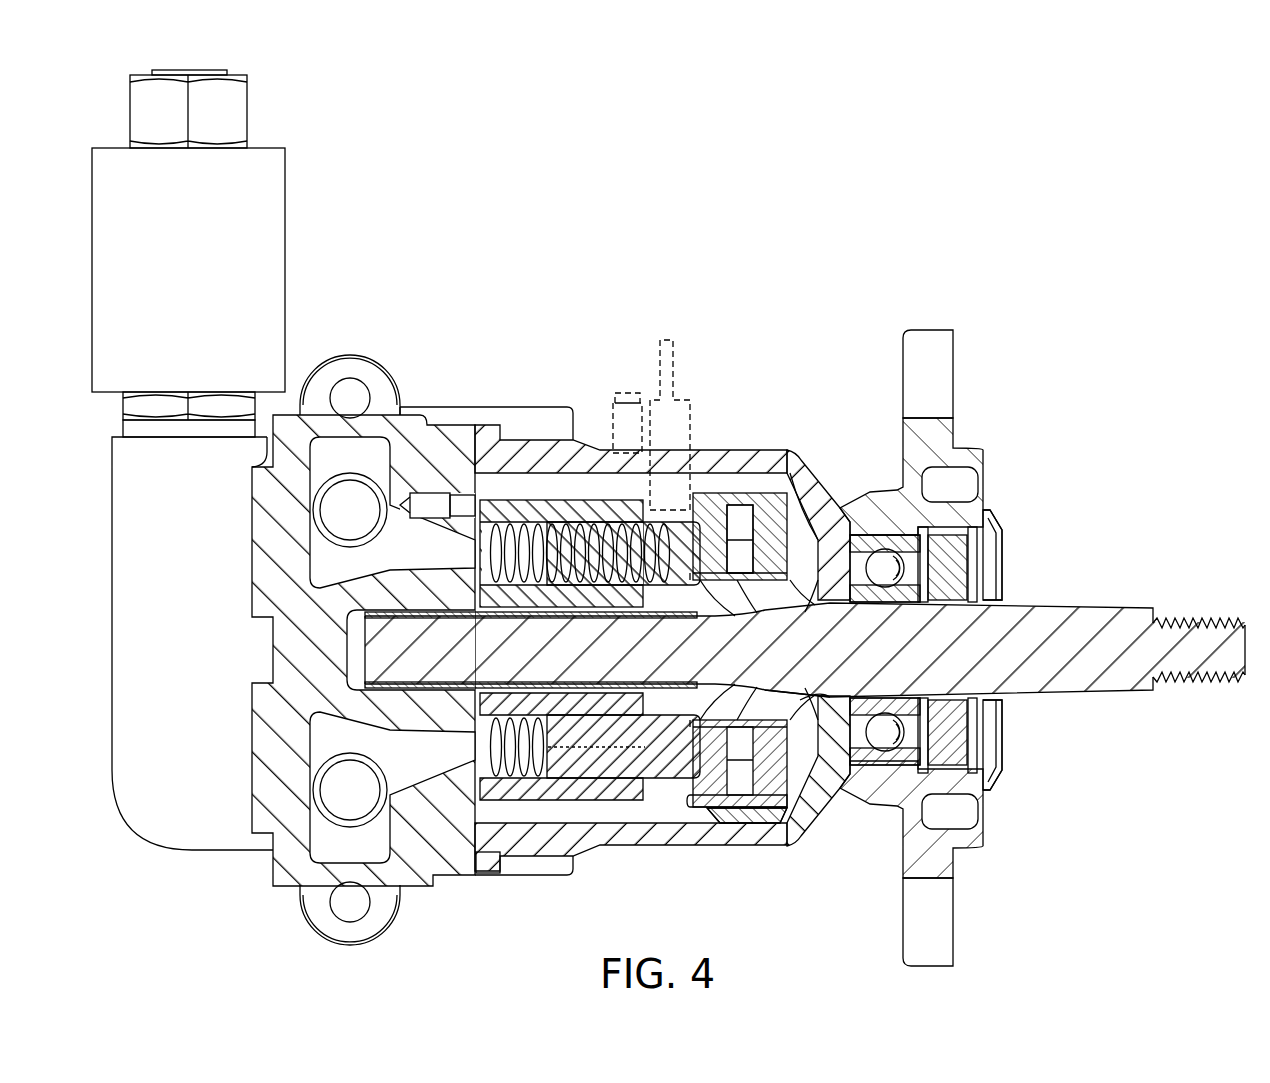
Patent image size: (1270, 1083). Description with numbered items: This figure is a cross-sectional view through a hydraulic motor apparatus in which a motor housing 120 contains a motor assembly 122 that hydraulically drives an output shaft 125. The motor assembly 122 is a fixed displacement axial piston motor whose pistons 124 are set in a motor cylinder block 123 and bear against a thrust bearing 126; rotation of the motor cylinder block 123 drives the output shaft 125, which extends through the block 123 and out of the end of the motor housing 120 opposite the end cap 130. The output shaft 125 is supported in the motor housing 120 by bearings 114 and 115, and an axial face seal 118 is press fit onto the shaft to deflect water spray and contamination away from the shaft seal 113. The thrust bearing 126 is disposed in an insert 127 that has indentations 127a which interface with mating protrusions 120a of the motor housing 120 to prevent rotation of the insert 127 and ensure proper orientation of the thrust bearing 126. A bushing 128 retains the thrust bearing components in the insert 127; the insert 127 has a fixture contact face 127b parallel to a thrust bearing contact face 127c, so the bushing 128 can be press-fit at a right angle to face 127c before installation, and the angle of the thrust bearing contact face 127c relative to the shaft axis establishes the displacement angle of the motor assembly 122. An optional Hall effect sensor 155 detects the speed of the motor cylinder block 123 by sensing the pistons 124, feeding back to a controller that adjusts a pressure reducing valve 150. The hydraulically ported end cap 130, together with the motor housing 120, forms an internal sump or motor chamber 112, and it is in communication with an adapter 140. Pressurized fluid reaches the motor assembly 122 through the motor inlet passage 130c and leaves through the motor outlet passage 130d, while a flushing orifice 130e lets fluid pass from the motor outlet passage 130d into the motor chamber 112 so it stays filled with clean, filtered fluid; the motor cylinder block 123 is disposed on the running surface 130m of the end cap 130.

The pressure reducing valve 150 is at (212, 283).
The adapter 140 is at (212, 658).
The end cap 130 is at (418, 423).
The flushing orifice 130e is at (433, 503).
The motor outlet passage 130d is at (333, 513).
The motor inlet passage 130c is at (333, 808).
The running surface 130m is at (490, 855).
The bearing 115 is at (420, 684).
The motor assembly 122 is at (580, 483).
The Hall effect sensor 155 is at (690, 376).
The thrust bearing 126 is at (740, 527).
The insert 127 is at (772, 480).
The indentations 127a is at (812, 517).
The fixture contact face 127b is at (818, 602).
The thrust bearing contact face 127c is at (782, 725).
The bearing 114 is at (885, 565).
The shaft seal 113 is at (943, 537).
The axial face seal 118 is at (1003, 553).
The output shaft 125 is at (1088, 611).
The protrusions 120a is at (845, 690).
The motor housing 120 is at (765, 838).
The bushing 128 is at (740, 800).
The pistons 124 is at (660, 780).
The motor chamber 112 is at (583, 813).
The motor cylinder block 123 is at (553, 793).